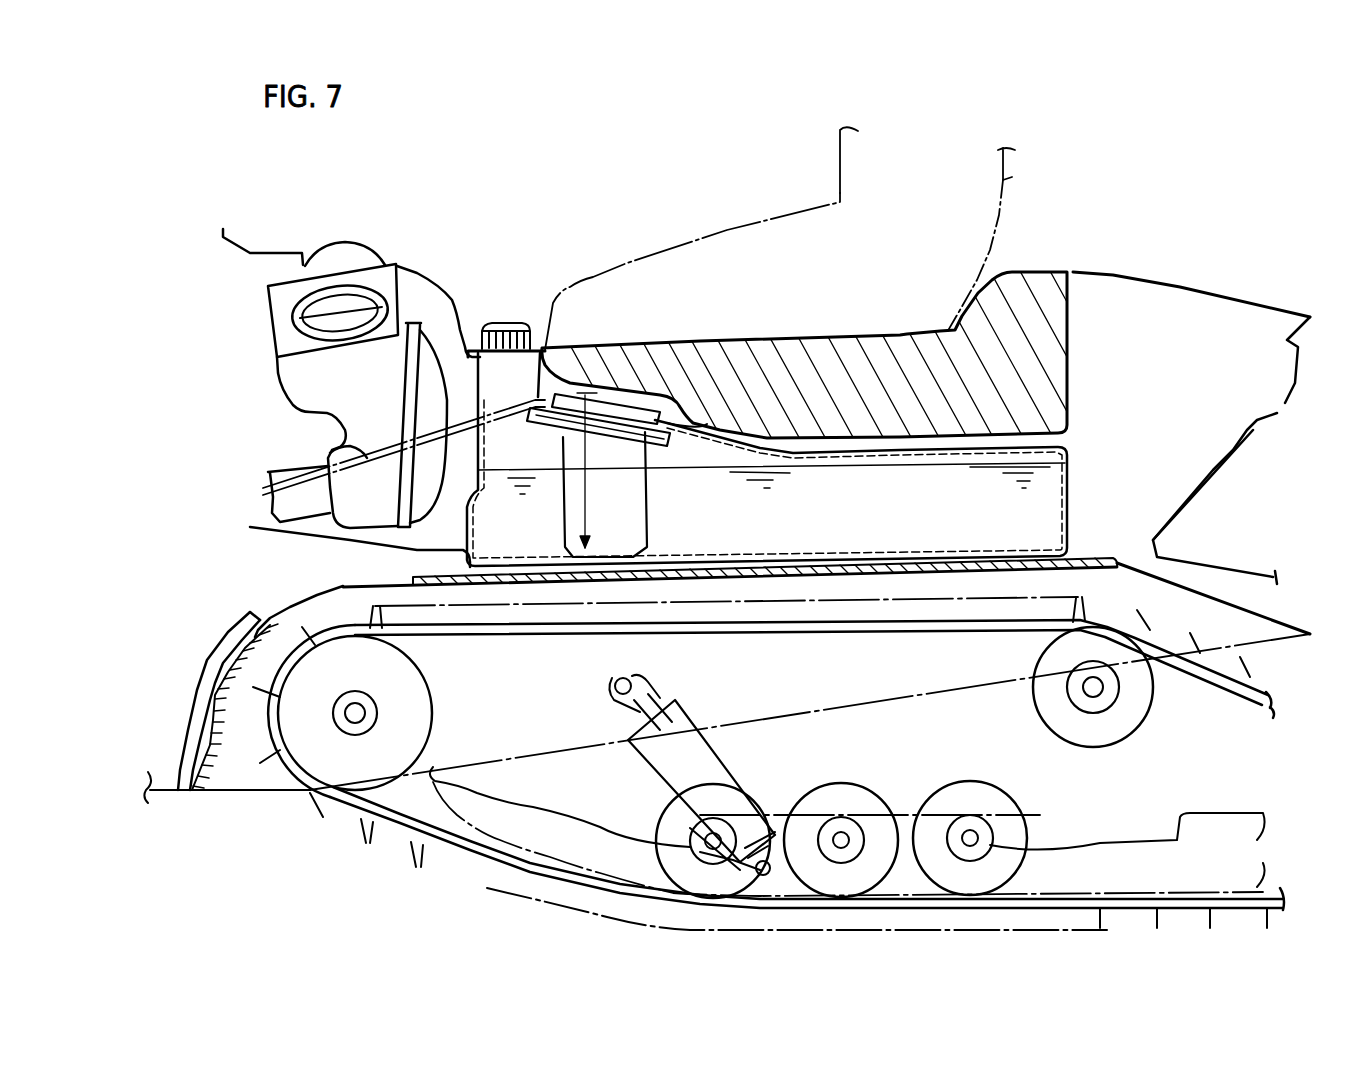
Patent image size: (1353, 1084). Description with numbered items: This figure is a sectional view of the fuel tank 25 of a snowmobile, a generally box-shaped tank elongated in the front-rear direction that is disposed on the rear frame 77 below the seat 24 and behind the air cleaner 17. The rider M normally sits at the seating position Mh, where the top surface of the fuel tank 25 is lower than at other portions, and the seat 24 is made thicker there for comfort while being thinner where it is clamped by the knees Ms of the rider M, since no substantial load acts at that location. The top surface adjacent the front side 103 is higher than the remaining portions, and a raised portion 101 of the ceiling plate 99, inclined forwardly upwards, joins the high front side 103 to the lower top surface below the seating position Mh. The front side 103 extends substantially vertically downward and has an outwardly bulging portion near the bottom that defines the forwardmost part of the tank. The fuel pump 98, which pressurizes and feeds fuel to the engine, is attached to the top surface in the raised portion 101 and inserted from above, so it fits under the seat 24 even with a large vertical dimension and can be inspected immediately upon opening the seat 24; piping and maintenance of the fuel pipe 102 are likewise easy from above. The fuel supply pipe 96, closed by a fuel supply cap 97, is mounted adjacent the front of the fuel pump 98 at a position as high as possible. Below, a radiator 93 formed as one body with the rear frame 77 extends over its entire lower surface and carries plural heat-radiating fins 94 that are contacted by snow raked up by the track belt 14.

The track belt 14 is at (402, 820).
The air cleaner 17 is at (332, 384).
The seat 24 is at (979, 380).
The fuel tank 25 is at (1087, 489).
The rear frame 77 is at (343, 587).
The radiator 93 is at (183, 780).
The heat-radiating fins 94 is at (218, 755).
The fuel supply pipe 96 is at (498, 378).
The fuel supply cap 97 is at (505, 322).
The fuel pump 98 is at (630, 413).
The ceiling plate 99 is at (823, 447).
The raised portion 101 is at (707, 424).
The fuel pipe 102 is at (307, 445).
The front side 103 is at (250, 527).
The rider M is at (1017, 180).
The seating position Mh is at (907, 335).
The knees Ms is at (603, 303).